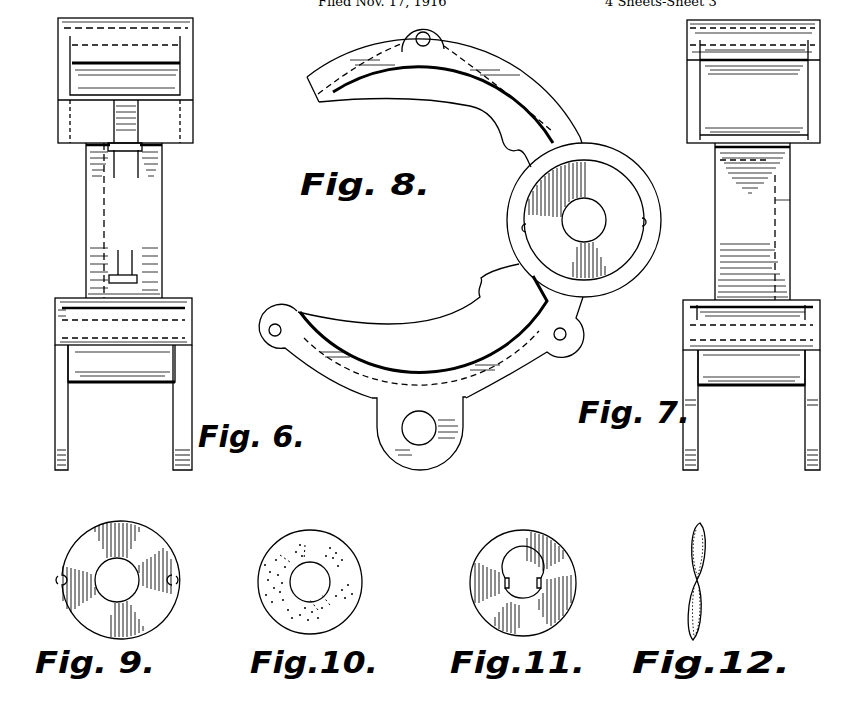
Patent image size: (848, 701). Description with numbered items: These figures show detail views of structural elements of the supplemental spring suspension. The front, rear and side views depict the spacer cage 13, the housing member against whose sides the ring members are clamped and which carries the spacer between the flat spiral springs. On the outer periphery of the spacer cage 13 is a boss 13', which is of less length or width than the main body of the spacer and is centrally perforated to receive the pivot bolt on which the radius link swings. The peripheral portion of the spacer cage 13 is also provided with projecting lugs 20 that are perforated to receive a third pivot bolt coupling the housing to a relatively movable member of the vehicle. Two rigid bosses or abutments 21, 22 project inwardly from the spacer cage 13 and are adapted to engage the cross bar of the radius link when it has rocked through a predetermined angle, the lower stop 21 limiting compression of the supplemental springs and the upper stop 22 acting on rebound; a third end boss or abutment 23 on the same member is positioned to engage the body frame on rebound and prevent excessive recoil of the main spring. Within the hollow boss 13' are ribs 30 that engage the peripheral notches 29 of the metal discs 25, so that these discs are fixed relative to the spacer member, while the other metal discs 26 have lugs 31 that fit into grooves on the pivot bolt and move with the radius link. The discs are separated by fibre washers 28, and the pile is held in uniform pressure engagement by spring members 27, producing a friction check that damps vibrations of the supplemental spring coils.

In FIG. 6, the spacer cage 13 is at (150, 216).
In FIG. 7, the spacer cage 13 is at (751, 217).
In FIG. 8, the spacer cage 13 is at (421, 213).
In FIG. 6, the boss 13' is at (158, 220).
In FIG. 7, the boss 13' is at (752, 221).
In FIG. 8, the boss 13' is at (586, 215).
In FIG. 6, the projecting lugs 20 is at (60, 395).
In FIG. 7, the projecting lugs 20 is at (805, 455).
In FIG. 8, the projecting lugs 20 is at (462, 432).
In FIG. 6, the boss or abutment 21 is at (135, 278).
In FIG. 8, the boss or abutment 21 is at (481, 278).
In FIG. 6, the boss or abutment 22 is at (116, 147).
In FIG. 8, the boss or abutment 22 is at (500, 145).
In FIG. 6, the end boss or abutment 23 is at (57, 318).
In FIG. 8, the end boss or abutment 23 is at (276, 342).
In FIG. 9, the metal discs 25 is at (148, 545).
In FIG. 11, the metal discs 26 is at (558, 550).
In FIG. 12, the spring members 27 is at (705, 543).
In FIG. 10, the washers 28 is at (340, 555).
In FIG. 9, the peripheral notches 29 is at (56, 580).
In FIG. 8, the ribs 30 is at (641, 214).
In FIG. 11, the lugs 31 is at (548, 580).